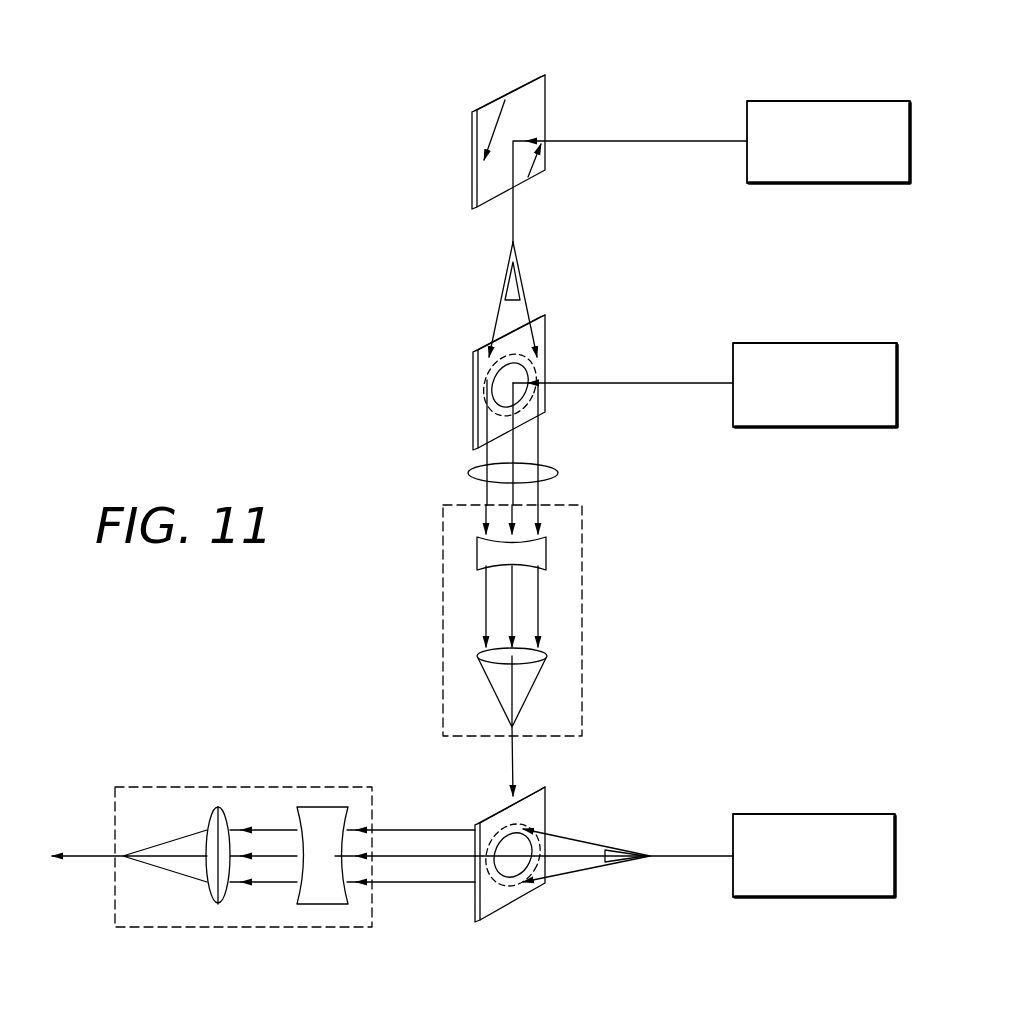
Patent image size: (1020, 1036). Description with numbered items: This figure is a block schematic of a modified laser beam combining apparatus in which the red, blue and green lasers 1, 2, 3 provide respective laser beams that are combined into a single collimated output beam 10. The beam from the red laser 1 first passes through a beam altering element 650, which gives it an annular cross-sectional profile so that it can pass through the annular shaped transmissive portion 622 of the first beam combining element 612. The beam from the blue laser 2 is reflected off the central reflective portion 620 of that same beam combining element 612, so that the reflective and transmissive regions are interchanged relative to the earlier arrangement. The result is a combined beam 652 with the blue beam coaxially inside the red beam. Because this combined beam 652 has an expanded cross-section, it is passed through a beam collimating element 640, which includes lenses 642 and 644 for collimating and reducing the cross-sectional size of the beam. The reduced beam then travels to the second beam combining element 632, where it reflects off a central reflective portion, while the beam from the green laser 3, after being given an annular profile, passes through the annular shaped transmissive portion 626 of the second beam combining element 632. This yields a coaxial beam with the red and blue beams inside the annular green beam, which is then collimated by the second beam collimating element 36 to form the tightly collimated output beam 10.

The red laser 1 is at (825, 101).
The blue laser 2 is at (825, 343).
The green laser 3 is at (808, 814).
The collimated output beam 10 is at (100, 853).
The second beam collimating element 36 is at (212, 787).
The beam combining element 612 is at (473, 368).
The central reflective portion 620 is at (522, 372).
The annular shaped transmissive portion 622 is at (503, 363).
The annular shaped transmissive portion 626 is at (503, 884).
The second beam combining element 632 is at (502, 910).
The beam collimating element 640 is at (582, 625).
The lens 642 is at (546, 548).
The lens 644 is at (476, 656).
The beam altering element 650 is at (508, 284).
The combined beam 652 is at (555, 475).